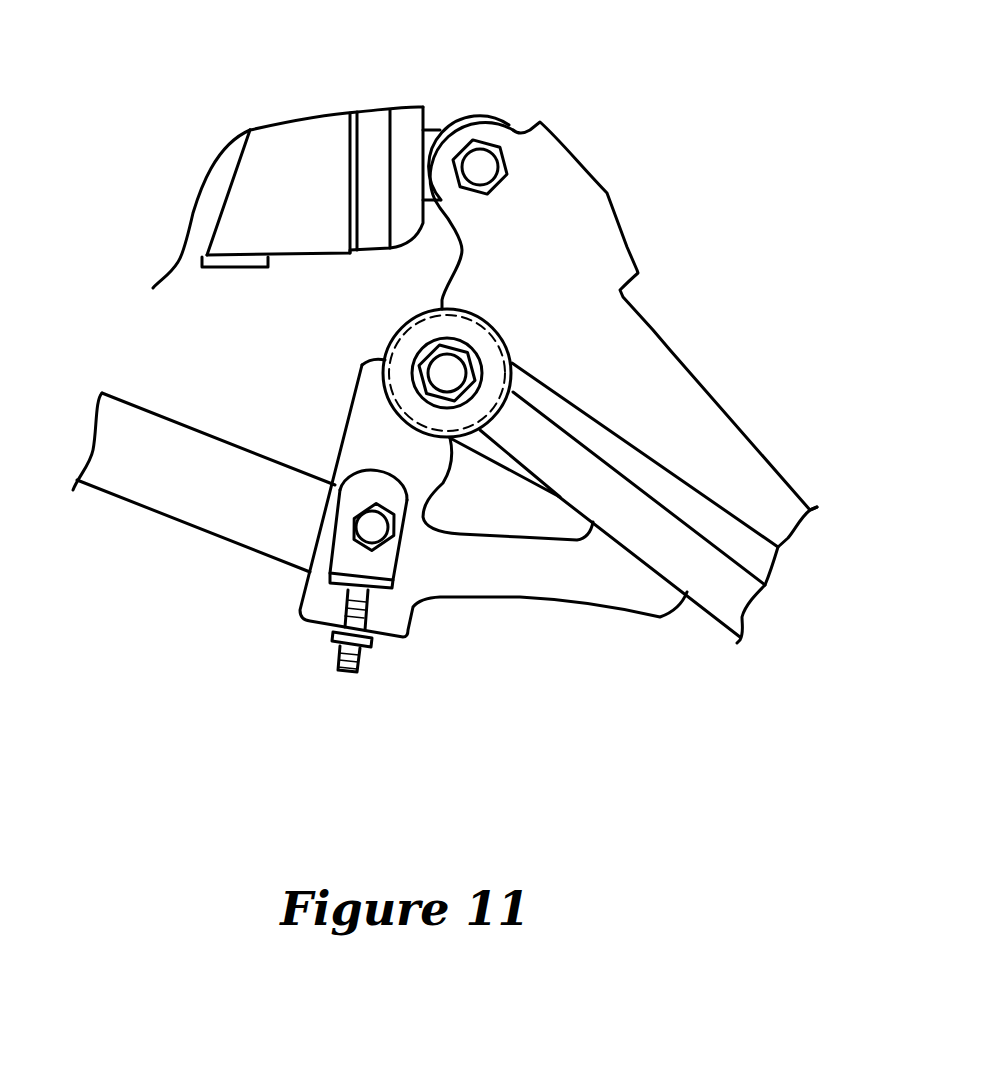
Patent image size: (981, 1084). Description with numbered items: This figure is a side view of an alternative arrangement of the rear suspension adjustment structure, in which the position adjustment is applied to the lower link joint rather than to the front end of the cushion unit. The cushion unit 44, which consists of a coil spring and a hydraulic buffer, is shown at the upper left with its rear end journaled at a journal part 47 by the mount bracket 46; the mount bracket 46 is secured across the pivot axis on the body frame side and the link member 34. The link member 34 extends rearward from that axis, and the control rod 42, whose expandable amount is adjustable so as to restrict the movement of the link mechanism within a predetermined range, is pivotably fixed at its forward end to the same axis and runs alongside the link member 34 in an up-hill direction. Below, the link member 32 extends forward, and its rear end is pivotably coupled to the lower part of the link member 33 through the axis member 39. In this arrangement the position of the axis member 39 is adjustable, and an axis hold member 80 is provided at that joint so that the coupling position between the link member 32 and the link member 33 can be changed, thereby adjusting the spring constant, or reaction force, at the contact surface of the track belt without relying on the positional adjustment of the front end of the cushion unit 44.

The link member 32 is at (138, 483).
The link member 33 is at (562, 585).
The link member 34 is at (710, 520).
The axis member 39 is at (370, 520).
The control rod 42 is at (610, 493).
The cushion unit 44 is at (302, 157).
The mount bracket 46 is at (593, 227).
The journal part 47 is at (483, 160).
The axis hold member 80 is at (352, 558).